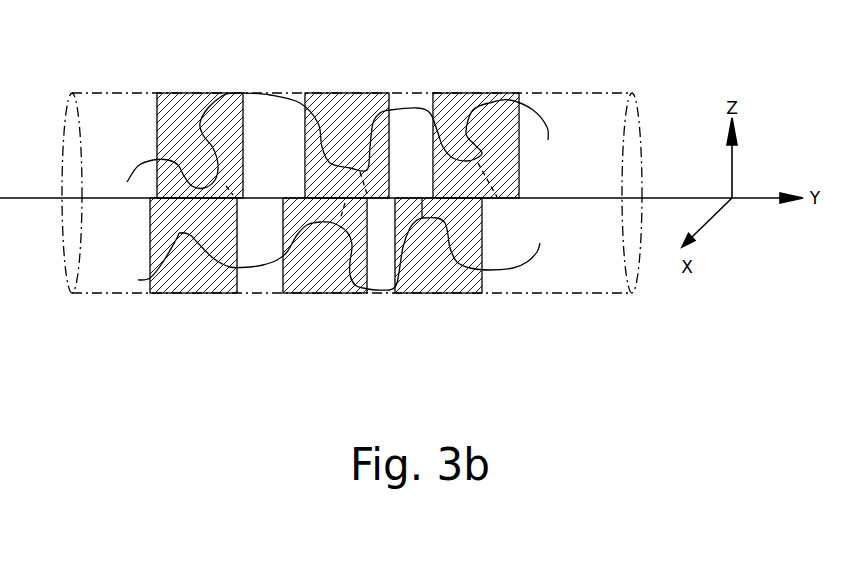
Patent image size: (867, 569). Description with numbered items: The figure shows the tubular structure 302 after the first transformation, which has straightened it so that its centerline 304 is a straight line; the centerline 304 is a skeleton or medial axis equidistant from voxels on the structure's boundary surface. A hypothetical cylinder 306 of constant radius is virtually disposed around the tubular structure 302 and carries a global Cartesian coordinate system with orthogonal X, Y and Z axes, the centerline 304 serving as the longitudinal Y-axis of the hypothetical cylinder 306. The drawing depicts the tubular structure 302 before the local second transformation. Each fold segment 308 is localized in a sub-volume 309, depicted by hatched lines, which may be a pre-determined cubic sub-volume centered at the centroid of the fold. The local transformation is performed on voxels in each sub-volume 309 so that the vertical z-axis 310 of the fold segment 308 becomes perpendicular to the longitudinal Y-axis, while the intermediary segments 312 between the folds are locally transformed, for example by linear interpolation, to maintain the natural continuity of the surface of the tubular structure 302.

The tubular structure 302 is at (523, 268).
The centerline 304 is at (550, 197).
The hypothetical cylinder 306 is at (418, 93).
The fold segment 308 is at (178, 235).
The sub-volume 309 is at (152, 232).
The vertical z-axis 310 is at (200, 210).
The intermediary segment 312 is at (270, 265).